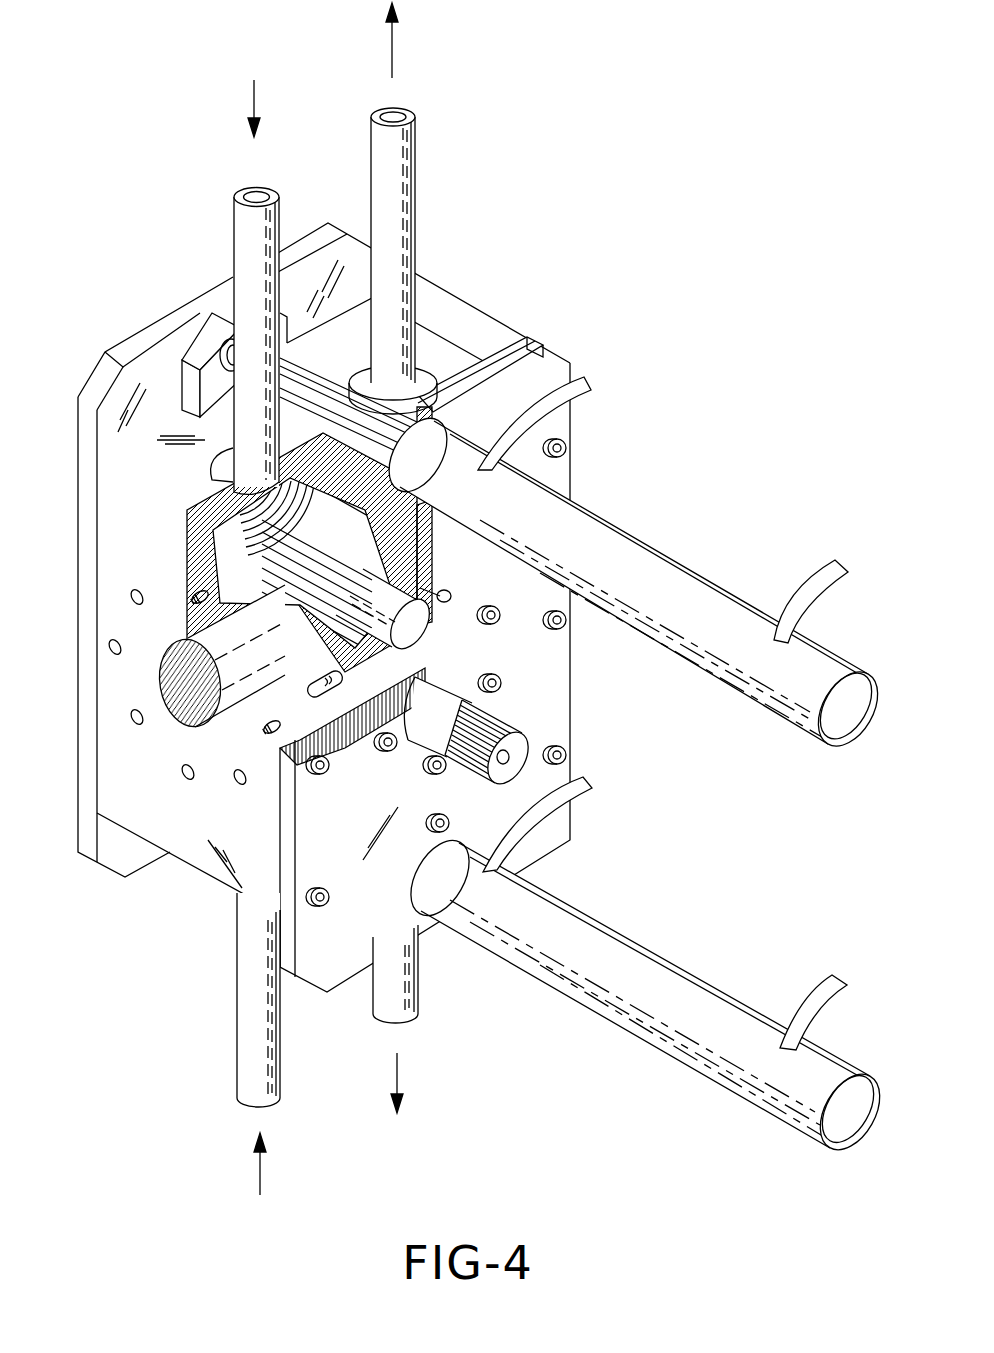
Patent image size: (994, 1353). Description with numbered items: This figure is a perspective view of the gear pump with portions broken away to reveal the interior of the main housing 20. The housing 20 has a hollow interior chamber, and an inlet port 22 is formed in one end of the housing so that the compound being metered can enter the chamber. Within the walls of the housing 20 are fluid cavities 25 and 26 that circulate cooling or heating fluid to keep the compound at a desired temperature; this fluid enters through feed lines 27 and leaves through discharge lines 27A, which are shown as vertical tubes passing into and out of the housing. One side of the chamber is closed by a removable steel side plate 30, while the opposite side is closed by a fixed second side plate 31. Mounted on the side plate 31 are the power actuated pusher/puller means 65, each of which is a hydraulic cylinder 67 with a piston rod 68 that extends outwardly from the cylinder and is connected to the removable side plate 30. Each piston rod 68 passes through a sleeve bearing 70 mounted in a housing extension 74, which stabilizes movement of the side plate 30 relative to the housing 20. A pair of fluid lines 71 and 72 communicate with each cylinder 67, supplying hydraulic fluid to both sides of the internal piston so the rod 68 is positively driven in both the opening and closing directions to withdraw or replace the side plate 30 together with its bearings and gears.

The main housing 20 is at (183, 908).
The inlet port 22 is at (205, 718).
The fluid cavity 25 is at (244, 520).
The fluid cavity 26 is at (318, 715).
The feed line 27 is at (242, 224).
The discharge line 27A is at (388, 157).
The side plate 30 is at (122, 388).
The second side plate 31 is at (540, 687).
The power actuated pusher/puller means 65 is at (690, 1070).
The hydraulic cylinder 67 is at (624, 548).
The piston rod 68 is at (297, 388).
The sleeve bearing 70 is at (220, 360).
The fluid line 71 is at (576, 376).
The fluid line 72 is at (818, 582).
The housing extension 74 is at (223, 313).